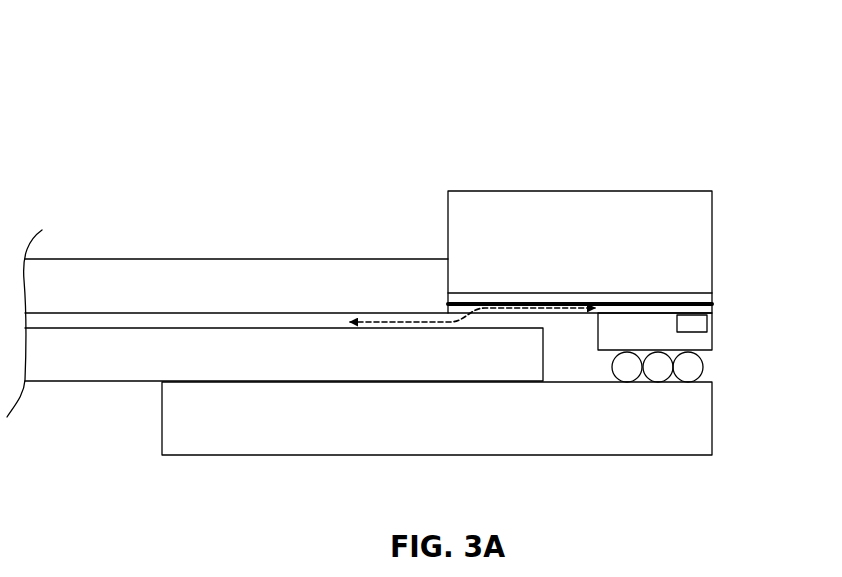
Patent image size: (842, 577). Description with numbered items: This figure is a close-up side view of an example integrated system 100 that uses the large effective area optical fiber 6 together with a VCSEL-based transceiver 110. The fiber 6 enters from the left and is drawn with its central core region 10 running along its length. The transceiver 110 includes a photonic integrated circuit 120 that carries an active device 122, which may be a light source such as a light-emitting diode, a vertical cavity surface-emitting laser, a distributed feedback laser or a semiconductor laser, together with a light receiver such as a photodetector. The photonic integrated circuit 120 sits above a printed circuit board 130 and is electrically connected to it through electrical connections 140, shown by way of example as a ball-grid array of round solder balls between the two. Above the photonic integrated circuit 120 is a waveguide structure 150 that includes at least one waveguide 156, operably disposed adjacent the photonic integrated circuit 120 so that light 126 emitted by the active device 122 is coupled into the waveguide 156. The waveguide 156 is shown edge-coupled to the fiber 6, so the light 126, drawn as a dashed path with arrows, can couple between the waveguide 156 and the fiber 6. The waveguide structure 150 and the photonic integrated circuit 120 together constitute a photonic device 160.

The integrated system 100 is at (238, 100).
The large effective area optical fiber 6 is at (150, 243).
The central core region 10 is at (110, 328).
The VCSEL-based transceiver 110 is at (485, 241).
The waveguide structure 150 is at (643, 191).
The waveguide 156 is at (689, 291).
The photonic device 160 is at (733, 192).
The photonic integrated circuit 120 is at (713, 342).
The active device 122 is at (710, 323).
The electrical connections 140 is at (712, 368).
The printed circuit board 130 is at (708, 413).
The light 126 is at (418, 322).